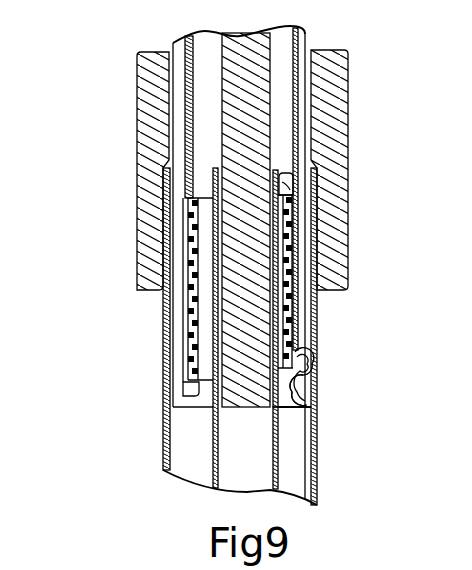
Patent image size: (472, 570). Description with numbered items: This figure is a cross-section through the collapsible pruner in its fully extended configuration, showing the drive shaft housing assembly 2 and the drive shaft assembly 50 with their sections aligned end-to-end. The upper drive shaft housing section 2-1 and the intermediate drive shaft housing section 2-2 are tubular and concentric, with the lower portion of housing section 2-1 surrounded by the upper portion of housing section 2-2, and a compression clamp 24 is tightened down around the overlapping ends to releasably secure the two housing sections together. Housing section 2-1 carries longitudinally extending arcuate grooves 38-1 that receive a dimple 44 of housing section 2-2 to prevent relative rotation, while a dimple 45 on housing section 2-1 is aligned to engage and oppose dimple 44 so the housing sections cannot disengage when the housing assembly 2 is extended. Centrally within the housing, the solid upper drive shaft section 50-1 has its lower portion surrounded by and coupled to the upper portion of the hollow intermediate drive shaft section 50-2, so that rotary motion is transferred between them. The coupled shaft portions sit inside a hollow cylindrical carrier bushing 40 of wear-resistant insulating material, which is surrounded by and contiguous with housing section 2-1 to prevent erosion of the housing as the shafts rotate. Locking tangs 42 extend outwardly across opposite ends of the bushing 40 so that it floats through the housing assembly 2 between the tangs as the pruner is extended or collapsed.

The drive shaft housing assembly 2 is at (140, 344).
The upper drive shaft housing section 2-1 is at (298, 128).
The intermediate drive shaft housing section 2-2 is at (318, 424).
The compression clamp 24 is at (137, 250).
The arcuate grooves 38-1 is at (304, 42).
The carrier bushing 40 is at (292, 224).
The locking tang 42 is at (300, 174).
The dimple 44 is at (316, 360).
The dimple 45 is at (318, 381).
The drive shaft assembly 50 is at (210, 432).
The upper drive shaft section 50-1 is at (242, 78).
The intermediate drive shaft section 50-2 is at (279, 452).